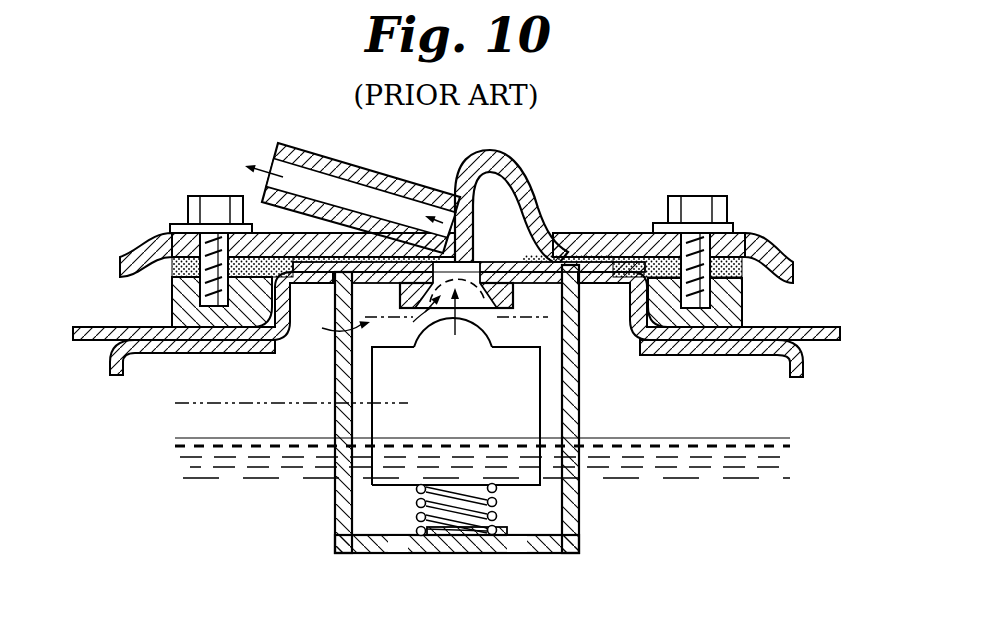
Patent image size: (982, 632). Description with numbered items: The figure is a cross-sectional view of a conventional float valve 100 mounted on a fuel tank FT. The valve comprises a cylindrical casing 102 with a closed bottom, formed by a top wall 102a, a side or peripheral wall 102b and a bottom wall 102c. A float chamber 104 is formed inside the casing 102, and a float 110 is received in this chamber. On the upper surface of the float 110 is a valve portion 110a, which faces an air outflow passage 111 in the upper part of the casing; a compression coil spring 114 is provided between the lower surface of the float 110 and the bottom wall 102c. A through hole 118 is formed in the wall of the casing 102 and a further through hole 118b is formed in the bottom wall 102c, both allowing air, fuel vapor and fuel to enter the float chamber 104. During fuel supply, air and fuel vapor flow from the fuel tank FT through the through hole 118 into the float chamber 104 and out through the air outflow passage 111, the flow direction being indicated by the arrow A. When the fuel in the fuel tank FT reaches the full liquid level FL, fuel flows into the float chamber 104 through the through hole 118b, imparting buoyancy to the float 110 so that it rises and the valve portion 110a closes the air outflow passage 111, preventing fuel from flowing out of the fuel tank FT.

The float valve 100 is at (312, 500).
The casing 102 is at (456, 373).
The top wall 102a is at (553, 262).
The side wall 102b is at (575, 500).
The bottom wall 102c is at (566, 553).
The float chamber 104 is at (508, 401).
The float 110 is at (506, 399).
The valve portion 110a is at (480, 348).
The air outflow passage 111 is at (473, 263).
The compression coil spring 114 is at (419, 528).
The through hole 118 is at (453, 408).
The through hole 118b is at (513, 545).
The fuel tank FT is at (793, 363).
The full liquid level FL is at (230, 403).
The flow direction arrow A is at (336, 320).